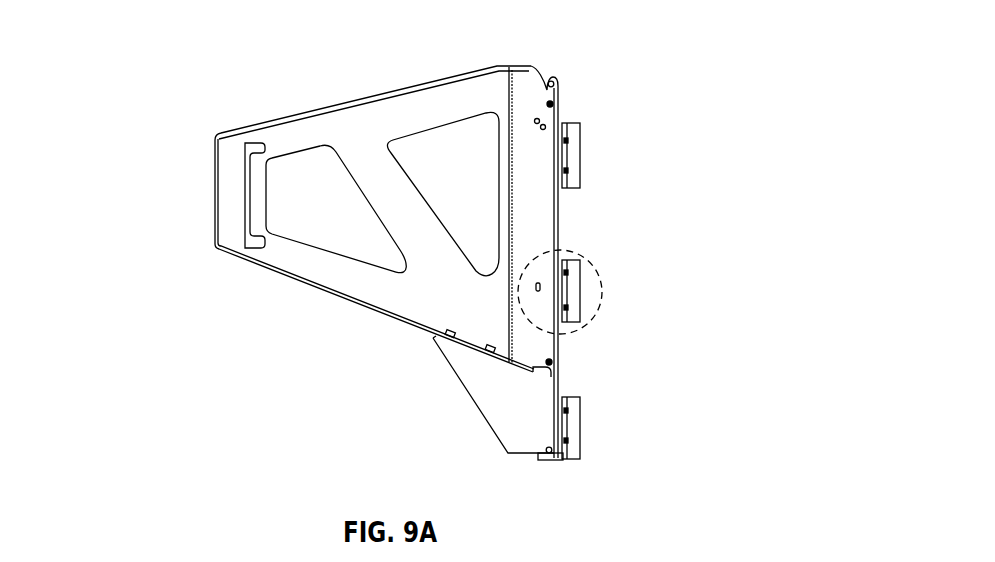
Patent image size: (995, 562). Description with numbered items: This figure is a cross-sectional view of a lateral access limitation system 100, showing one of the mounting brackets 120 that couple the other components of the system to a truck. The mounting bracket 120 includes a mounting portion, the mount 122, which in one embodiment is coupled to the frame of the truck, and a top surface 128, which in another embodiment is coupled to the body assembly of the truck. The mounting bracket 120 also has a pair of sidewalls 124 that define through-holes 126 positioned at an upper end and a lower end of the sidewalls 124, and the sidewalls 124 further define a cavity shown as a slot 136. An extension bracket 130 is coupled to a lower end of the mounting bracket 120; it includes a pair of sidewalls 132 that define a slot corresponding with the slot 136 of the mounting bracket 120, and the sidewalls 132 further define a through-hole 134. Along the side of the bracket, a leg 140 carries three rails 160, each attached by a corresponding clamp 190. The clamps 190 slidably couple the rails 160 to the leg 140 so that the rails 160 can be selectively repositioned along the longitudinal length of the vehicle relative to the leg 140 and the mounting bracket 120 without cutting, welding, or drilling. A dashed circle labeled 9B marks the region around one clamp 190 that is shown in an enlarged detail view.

The lateral access limitation system 100 is at (155, 37).
The mounting bracket 120 is at (312, 99).
The mount 122 is at (216, 192).
The sidewalls 124 is at (518, 113).
The through-holes 126 is at (553, 104).
The top surface 128 is at (408, 92).
The extension bracket 130 is at (493, 445).
The sidewalls 132 is at (494, 403).
The through-hole 134 is at (551, 454).
The slot 136 is at (545, 70).
The leg 140 is at (556, 374).
The rail 160 is at (602, 166).
The clamp 190 is at (578, 134).
The detail view callout 9B is at (593, 272).